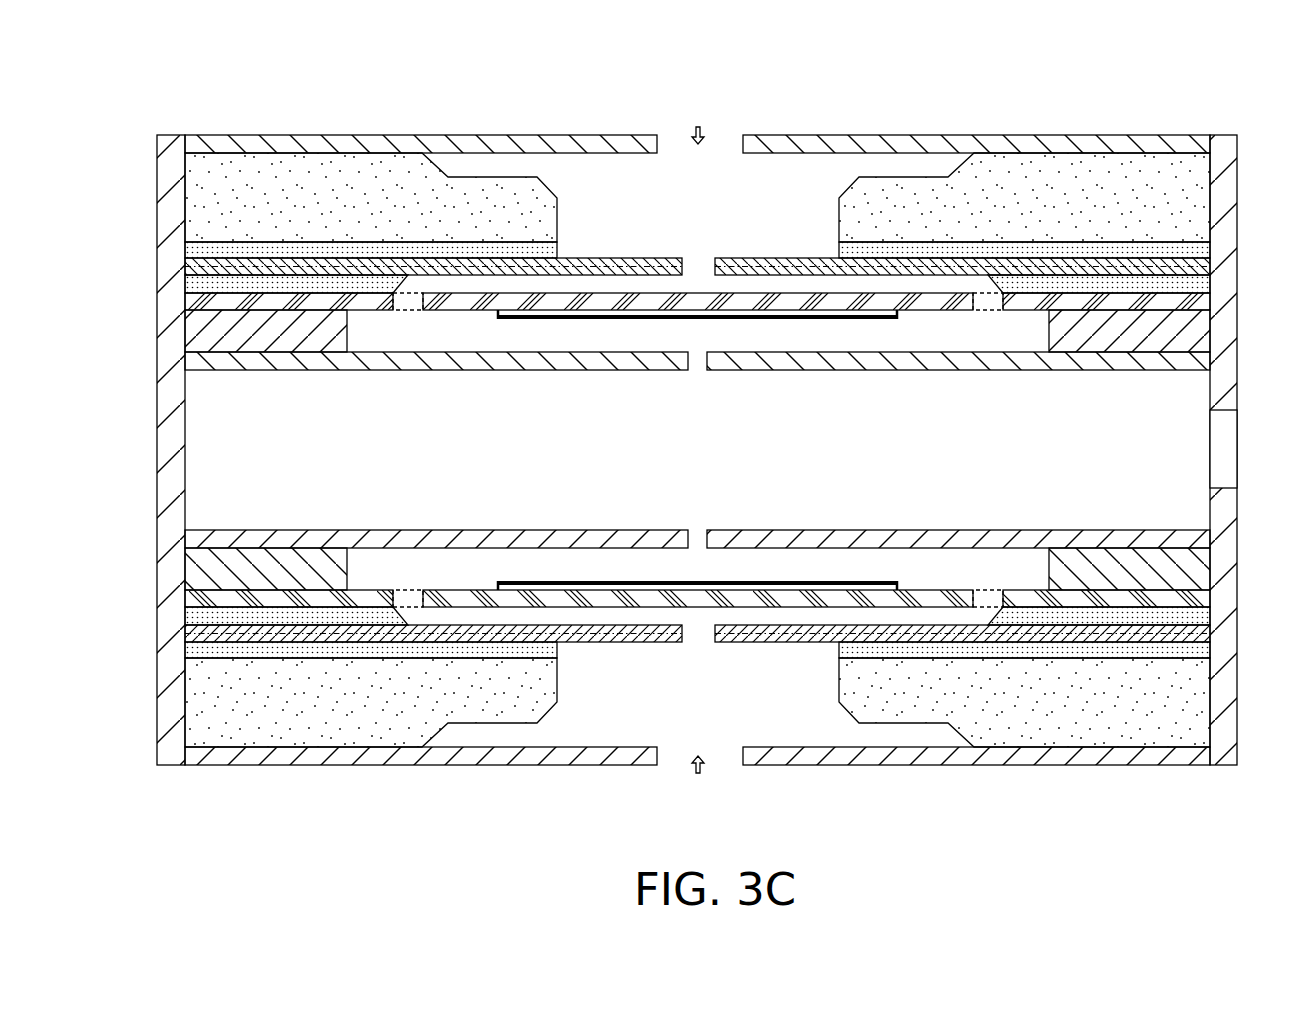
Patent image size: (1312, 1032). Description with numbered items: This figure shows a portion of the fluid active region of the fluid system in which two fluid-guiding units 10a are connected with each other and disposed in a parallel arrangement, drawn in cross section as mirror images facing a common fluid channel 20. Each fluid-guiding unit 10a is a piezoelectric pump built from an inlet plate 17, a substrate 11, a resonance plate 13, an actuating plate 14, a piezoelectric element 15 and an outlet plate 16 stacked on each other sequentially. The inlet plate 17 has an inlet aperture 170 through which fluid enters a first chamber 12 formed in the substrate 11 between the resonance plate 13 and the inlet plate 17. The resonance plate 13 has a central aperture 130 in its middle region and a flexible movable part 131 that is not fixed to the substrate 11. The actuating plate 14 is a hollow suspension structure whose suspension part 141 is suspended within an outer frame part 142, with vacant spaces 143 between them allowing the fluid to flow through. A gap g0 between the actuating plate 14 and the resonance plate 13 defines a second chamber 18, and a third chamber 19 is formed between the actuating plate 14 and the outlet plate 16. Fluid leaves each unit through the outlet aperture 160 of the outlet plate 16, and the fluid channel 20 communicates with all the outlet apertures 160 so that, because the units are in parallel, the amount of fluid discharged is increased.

The fluid-guiding unit 10a is at (203, 128).
The substrate 11 is at (210, 192).
The first chamber 12 is at (628, 197).
The resonance plate 13 is at (188, 268).
The central aperture 130 is at (692, 258).
The movable part 131 is at (602, 262).
The actuating plate 14 is at (188, 303).
The suspension part 141 is at (903, 303).
The outer frame part 142 is at (297, 295).
The vacant spaces 143 is at (403, 300).
The piezoelectric element 15 is at (510, 315).
The outlet plate 16 is at (188, 360).
The outlet aperture 160 is at (696, 356).
The inlet plate 17 is at (197, 145).
The inlet aperture 170 is at (735, 150).
The second chamber 18 is at (767, 283).
The third chamber 19 is at (803, 337).
The fluid channel 20 is at (1218, 445).
The gap g0 is at (212, 283).